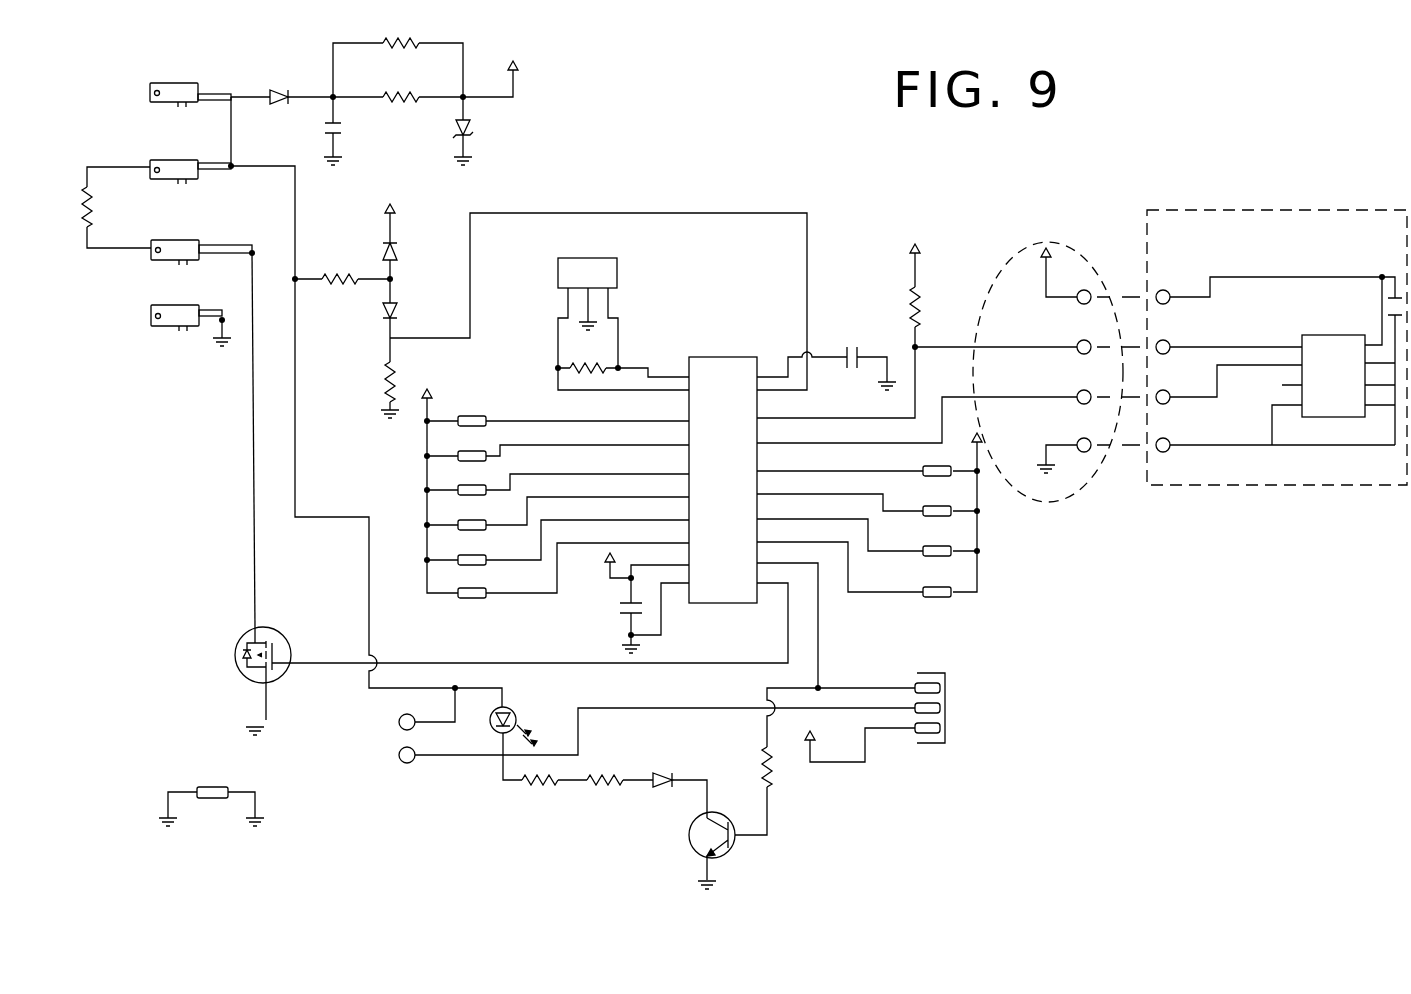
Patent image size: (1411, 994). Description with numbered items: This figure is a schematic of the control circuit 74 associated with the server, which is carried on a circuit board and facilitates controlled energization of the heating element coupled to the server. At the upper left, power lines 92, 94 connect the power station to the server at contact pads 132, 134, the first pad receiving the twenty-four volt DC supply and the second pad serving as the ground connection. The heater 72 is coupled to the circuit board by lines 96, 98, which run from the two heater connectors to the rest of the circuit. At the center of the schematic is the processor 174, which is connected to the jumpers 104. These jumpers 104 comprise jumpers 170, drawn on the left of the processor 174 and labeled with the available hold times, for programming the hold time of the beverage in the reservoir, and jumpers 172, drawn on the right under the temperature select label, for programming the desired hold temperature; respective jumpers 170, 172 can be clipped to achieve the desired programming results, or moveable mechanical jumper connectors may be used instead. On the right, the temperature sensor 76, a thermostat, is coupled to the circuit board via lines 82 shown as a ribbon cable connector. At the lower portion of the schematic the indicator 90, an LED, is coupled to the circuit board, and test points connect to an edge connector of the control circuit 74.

The contact pad 132 is at (162, 82).
The power line 92 is at (205, 90).
The line 96 is at (175, 160).
The line 98 is at (185, 242).
The heater 72 is at (92, 220).
The power line 94 is at (205, 306).
The contact pad 134 is at (163, 330).
The jumpers 104 is at (698, 268).
The processor 174 is at (718, 357).
The jumpers 170 is at (541, 417).
The jumpers 172 is at (838, 445).
The ribbon cable 82 is at (1085, 258).
The temperature sensor 76 is at (1217, 210).
The indicator 90 is at (492, 712).
The control circuit 74 is at (1108, 740).